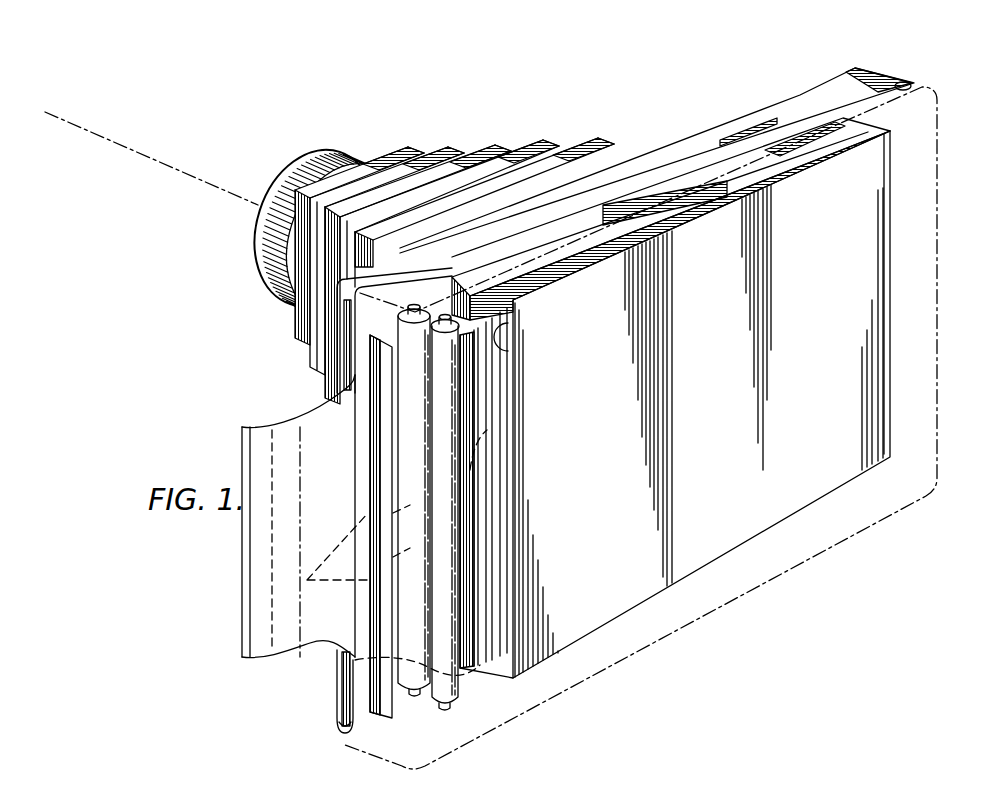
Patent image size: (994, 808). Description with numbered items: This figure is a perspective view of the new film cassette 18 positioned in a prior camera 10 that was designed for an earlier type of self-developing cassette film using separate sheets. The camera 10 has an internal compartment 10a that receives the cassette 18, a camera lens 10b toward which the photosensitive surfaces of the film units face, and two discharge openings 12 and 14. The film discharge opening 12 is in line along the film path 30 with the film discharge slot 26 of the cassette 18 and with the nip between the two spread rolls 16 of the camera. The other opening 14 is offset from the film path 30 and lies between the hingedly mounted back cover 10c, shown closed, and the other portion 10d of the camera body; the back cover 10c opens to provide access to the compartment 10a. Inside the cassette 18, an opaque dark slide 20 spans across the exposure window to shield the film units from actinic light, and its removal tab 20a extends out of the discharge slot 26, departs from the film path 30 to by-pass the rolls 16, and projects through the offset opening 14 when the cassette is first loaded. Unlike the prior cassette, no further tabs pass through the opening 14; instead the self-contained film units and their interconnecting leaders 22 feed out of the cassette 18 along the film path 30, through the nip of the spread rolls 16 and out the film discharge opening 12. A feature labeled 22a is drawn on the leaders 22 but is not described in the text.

The camera 10 is at (553, 128).
The internal compartment 10a is at (801, 150).
The camera lens 10b is at (336, 152).
The back cover 10c is at (882, 102).
The other portion of the camera body 10d is at (338, 697).
The film discharge opening 12 is at (340, 717).
The discharge opening 14 is at (348, 673).
The spread rolls 16 is at (463, 693).
The cassette 18 is at (737, 359).
The dark slide 20 is at (261, 418).
The removal tab 20a is at (289, 500).
The interconnecting leaders 22 is at (483, 433).
The slot in plate 22a is at (485, 490).
The film discharge slot 26 is at (512, 357).
The film path 30 is at (307, 580).